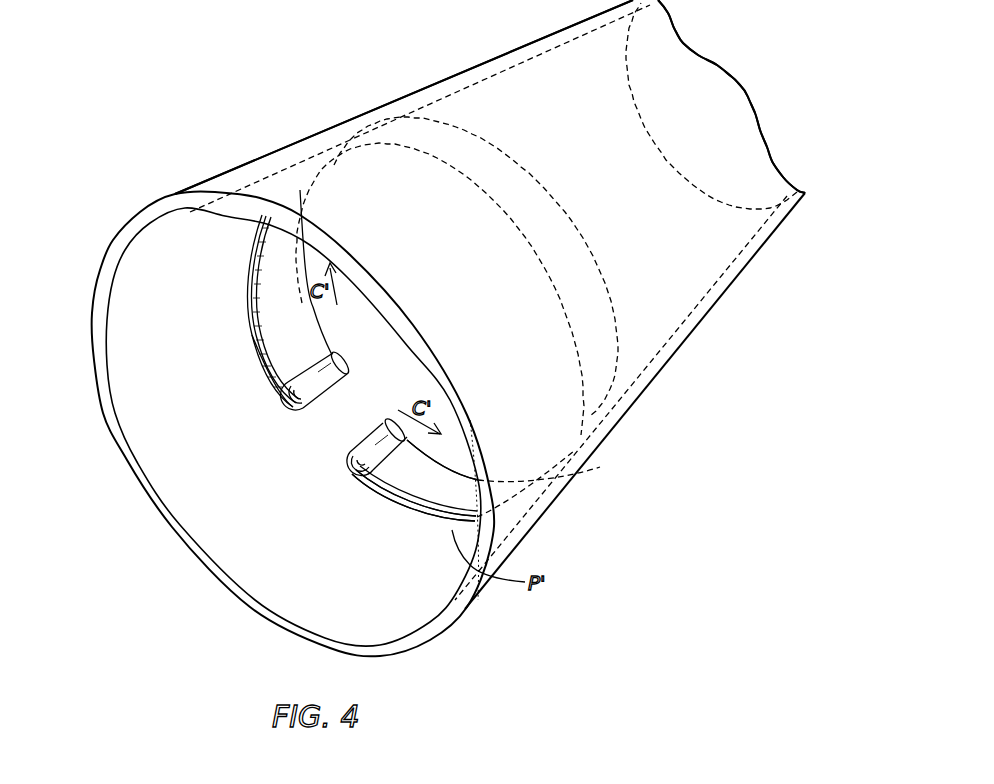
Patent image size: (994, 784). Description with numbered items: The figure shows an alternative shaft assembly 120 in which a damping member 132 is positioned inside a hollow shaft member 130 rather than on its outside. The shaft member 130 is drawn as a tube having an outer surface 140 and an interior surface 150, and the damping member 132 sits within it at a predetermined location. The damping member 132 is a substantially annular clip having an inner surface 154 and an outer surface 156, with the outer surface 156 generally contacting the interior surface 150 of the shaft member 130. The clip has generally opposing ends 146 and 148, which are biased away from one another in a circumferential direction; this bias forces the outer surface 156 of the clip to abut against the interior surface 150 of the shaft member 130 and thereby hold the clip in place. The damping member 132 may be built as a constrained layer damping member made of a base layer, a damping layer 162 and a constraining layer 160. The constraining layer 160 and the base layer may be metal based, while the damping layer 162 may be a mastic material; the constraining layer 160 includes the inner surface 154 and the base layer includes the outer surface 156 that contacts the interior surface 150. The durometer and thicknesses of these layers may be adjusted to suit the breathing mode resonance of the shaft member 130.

The shaft assembly 120 is at (186, 80).
The shaft member 130 is at (283, 150).
The outer surface 140 is at (652, 335).
The interior surface 150 is at (152, 406).
The inner surface 154 is at (280, 302).
The outer surface 156 is at (247, 275).
The damping member 132 is at (262, 343).
The opposing end 146 is at (316, 378).
The opposing end 148 is at (368, 433).
The constraining layer 160 is at (403, 508).
The damping layer 162 is at (362, 480).